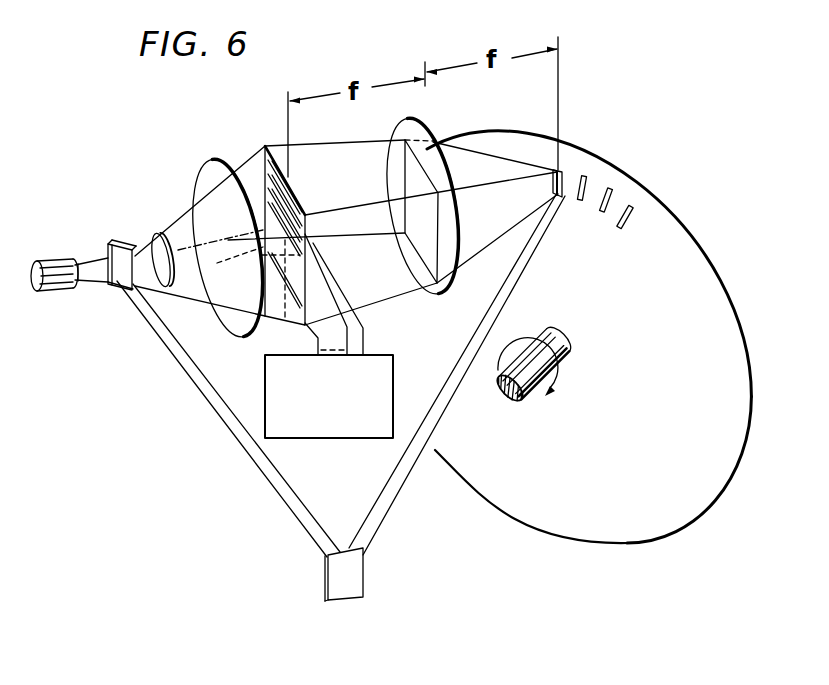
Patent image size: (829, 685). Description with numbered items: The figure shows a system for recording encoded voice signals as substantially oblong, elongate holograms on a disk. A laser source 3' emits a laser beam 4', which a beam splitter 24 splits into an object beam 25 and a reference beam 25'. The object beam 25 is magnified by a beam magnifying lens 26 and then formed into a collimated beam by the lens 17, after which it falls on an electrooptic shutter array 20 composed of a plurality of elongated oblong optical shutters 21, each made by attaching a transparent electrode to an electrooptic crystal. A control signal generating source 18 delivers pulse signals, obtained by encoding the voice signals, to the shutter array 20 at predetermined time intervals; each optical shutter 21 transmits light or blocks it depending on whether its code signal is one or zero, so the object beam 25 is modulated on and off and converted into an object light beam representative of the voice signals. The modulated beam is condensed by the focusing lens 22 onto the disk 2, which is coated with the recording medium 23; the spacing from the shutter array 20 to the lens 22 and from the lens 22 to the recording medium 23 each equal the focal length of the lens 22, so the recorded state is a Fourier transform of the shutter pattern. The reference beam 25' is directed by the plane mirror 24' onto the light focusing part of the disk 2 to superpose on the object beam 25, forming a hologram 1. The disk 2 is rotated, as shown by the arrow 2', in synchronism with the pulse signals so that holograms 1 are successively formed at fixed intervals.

The hologram 1 is at (601, 214).
The disk 2 is at (618, 195).
The arrow indicating disk rotation 2' is at (552, 364).
The laser source 3' is at (54, 253).
The laser beam 4' is at (104, 292).
The lens for obtaining a collimated beam 17 is at (239, 331).
The control signal generating source 18 is at (404, 342).
The electrooptic shutter array 20 is at (296, 198).
The optical shutter 21 is at (264, 173).
The focusing lens 22 is at (409, 125).
The recording medium 23 is at (652, 249).
The beam splitter 24 is at (112, 244).
The plane mirror 24' is at (373, 577).
The object beam 25 is at (162, 232).
The reference beam 25' is at (341, 375).
The beam magnifying lens 26 is at (170, 288).